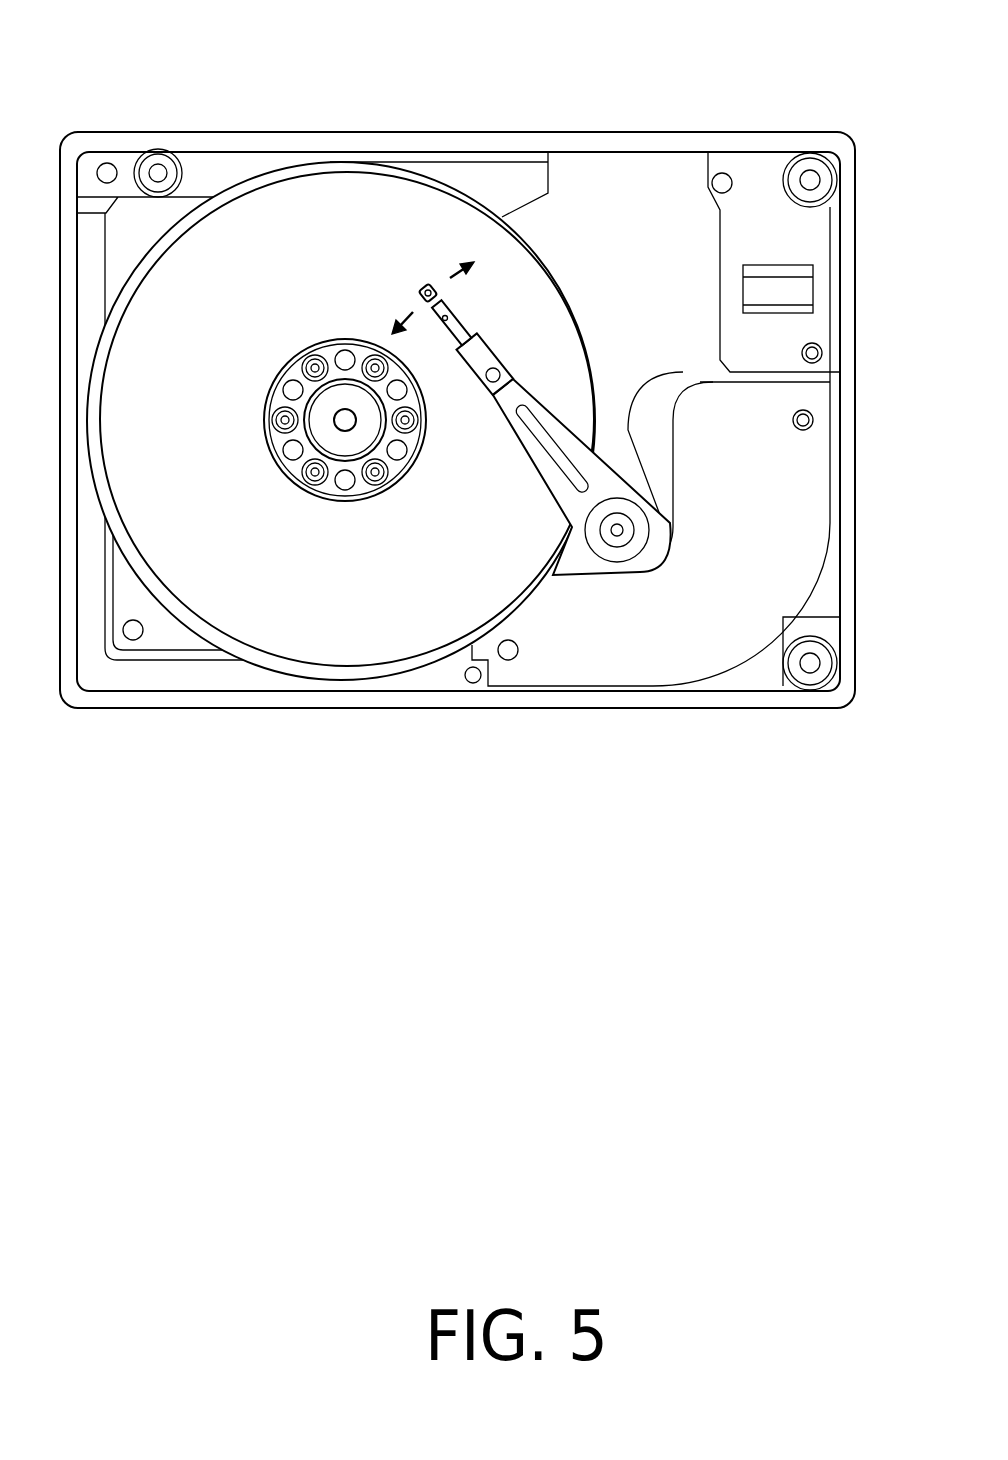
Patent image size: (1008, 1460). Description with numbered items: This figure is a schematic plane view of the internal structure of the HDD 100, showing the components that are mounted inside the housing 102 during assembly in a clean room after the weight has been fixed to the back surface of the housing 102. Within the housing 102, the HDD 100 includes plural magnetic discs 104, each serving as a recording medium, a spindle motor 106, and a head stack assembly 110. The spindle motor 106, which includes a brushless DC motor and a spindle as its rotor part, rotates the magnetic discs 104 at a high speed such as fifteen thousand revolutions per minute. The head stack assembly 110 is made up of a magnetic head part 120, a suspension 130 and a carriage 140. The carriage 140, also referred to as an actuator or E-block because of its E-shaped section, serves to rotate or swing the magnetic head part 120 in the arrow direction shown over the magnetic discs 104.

The HDD 100 is at (472, 80).
The housing 102 is at (343, 710).
The magnetic disc 104 is at (566, 304).
The spindle motor 106 is at (316, 432).
The head stack assembly 110 is at (505, 418).
The magnetic head part 120 is at (421, 290).
The suspension 130 is at (458, 315).
The carriage 140 is at (527, 455).